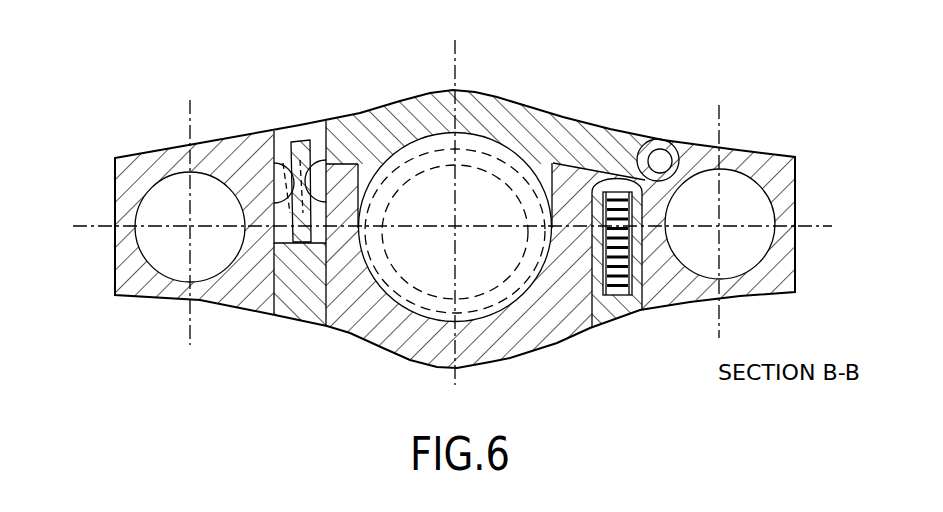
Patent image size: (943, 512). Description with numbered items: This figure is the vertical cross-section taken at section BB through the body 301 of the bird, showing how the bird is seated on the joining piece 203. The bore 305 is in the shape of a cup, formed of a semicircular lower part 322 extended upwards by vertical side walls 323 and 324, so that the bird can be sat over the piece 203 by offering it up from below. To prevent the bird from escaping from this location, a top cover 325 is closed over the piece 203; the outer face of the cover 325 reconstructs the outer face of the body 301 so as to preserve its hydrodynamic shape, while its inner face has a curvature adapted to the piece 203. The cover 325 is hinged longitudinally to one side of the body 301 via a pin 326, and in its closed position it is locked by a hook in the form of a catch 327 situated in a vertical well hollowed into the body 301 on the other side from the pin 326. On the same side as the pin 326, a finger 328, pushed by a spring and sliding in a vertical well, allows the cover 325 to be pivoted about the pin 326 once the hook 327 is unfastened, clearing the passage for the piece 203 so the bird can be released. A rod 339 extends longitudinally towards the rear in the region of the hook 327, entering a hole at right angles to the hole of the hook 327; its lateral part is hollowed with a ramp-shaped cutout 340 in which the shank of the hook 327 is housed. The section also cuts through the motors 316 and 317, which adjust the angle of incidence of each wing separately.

The body 301 is at (773, 160).
The motor 316 is at (765, 210).
The motor 317 is at (153, 248).
The top cover 325 is at (502, 118).
The pin 326 is at (657, 155).
The hook (catch) 327 is at (297, 132).
The rod 339 is at (322, 166).
The ramp-shaped cutout 340 is at (282, 170).
The semicircular lower part 322 is at (478, 316).
The vertical side wall 323 is at (358, 184).
The vertical side wall 324 is at (552, 197).
The bore 305 is at (450, 233).
The body of the joining piece 203 is at (472, 148).
The finger 328 is at (618, 290).